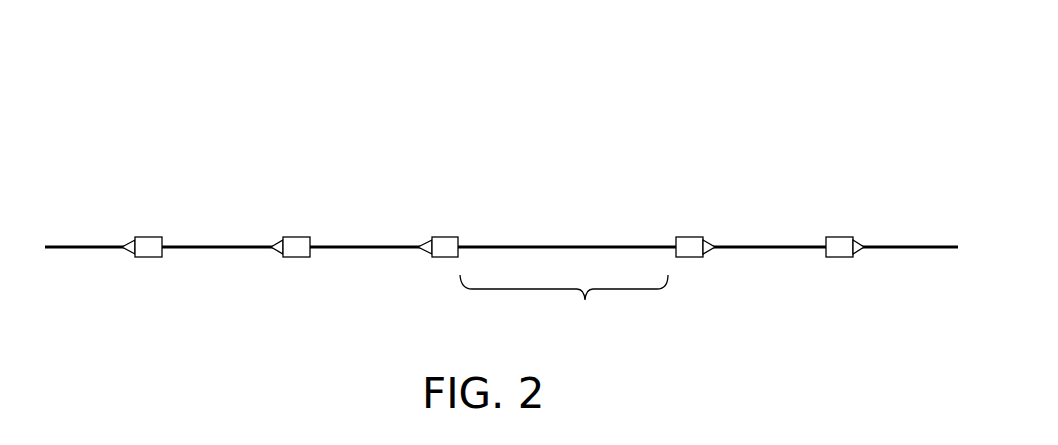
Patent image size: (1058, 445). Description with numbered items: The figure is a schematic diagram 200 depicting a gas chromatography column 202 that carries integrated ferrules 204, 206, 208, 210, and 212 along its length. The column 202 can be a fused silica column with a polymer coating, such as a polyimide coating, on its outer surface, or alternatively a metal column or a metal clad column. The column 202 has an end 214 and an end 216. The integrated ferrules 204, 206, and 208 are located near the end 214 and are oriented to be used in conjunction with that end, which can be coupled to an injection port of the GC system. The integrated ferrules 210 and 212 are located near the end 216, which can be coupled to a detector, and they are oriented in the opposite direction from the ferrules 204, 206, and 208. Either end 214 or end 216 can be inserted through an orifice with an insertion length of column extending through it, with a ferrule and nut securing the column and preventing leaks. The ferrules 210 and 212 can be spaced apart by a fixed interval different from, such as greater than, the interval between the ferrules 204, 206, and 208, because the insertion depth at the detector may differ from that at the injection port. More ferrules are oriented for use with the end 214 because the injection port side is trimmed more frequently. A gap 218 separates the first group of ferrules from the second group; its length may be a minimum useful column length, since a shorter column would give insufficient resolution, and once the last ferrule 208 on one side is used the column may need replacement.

The diagram 200 is at (780, 115).
The GC column 202 is at (400, 250).
The integrated ferrule 204 is at (148, 237).
The integrated ferrule 206 is at (297, 237).
The integrated ferrule 208 is at (443, 237).
The integrated ferrule 210 is at (695, 237).
The integrated ferrule 212 is at (845, 237).
The end 214 is at (49, 280).
The end 216 is at (946, 280).
The gap 218 is at (564, 305).